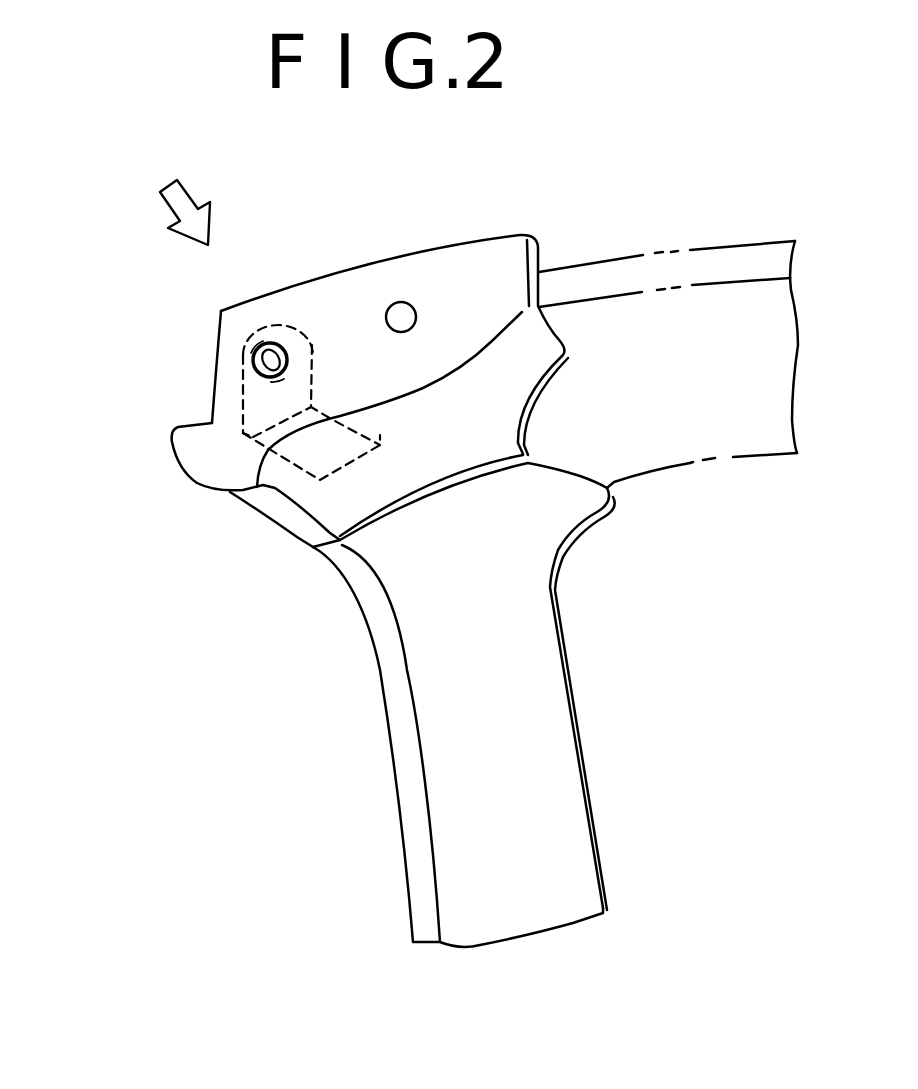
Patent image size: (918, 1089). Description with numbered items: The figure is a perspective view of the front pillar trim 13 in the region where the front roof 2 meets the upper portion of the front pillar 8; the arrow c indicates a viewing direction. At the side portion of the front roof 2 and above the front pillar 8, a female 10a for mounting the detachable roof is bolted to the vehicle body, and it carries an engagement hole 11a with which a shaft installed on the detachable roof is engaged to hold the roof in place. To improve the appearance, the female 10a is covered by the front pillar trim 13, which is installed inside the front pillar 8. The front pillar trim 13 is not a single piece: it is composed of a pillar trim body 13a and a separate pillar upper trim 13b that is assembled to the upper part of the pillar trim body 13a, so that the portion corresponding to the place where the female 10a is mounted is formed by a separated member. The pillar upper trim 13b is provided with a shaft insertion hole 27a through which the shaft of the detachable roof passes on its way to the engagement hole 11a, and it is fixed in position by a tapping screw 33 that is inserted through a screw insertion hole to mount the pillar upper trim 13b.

The front roof 2 is at (707, 272).
The front pillar 8 is at (542, 700).
The female for mounting the detachable roof 10a is at (252, 412).
The engagement hole 11a is at (290, 330).
The front pillar trim 13 is at (358, 707).
The pillar trim body 13a is at (447, 831).
The pillar upper trim 13b is at (220, 453).
The shaft insertion hole 27a is at (253, 358).
The tapping screw 33 is at (401, 311).
The viewing direction arrow c is at (176, 188).